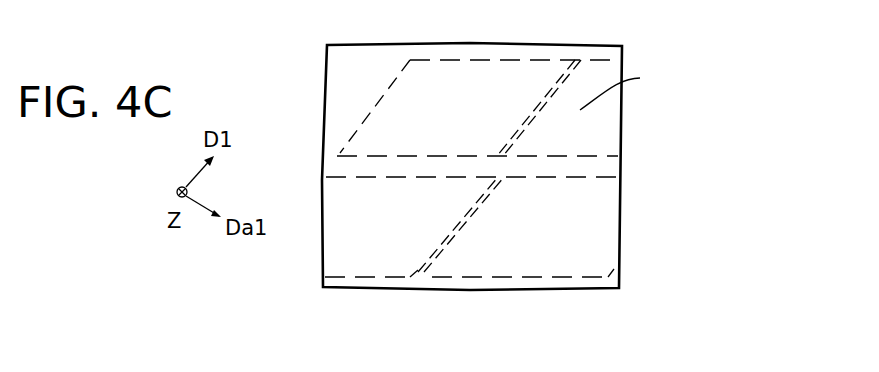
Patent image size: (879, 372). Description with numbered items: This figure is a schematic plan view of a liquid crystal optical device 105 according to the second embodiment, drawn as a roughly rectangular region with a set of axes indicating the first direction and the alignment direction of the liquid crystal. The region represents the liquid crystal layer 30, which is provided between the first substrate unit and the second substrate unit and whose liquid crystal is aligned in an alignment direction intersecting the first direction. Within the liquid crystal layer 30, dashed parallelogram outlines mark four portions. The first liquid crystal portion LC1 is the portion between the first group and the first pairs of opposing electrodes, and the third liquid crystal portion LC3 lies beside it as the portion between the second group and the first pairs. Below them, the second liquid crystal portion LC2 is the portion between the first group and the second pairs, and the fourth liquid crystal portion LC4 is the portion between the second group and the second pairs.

The pixel 105 is at (668, 57).
The liquid crystal layer 30 is at (624, 89).
The first liquid crystal portion LC1 is at (443, 58).
The second liquid crystal portion LC2 is at (358, 278).
The third liquid crystal portion LC3 is at (597, 55).
The fourth liquid crystal portion LC4 is at (510, 278).